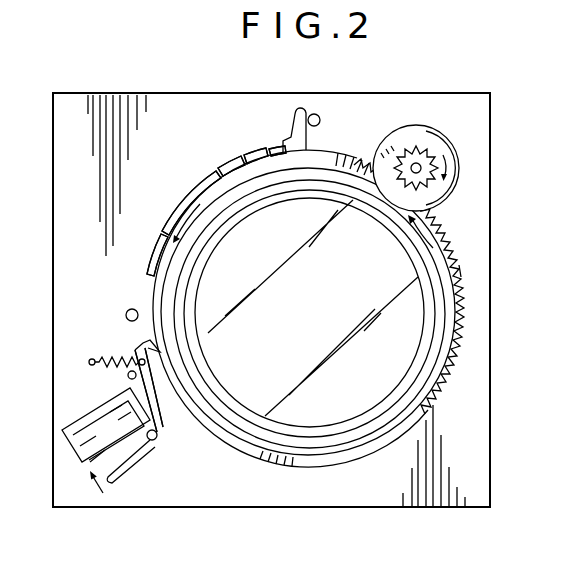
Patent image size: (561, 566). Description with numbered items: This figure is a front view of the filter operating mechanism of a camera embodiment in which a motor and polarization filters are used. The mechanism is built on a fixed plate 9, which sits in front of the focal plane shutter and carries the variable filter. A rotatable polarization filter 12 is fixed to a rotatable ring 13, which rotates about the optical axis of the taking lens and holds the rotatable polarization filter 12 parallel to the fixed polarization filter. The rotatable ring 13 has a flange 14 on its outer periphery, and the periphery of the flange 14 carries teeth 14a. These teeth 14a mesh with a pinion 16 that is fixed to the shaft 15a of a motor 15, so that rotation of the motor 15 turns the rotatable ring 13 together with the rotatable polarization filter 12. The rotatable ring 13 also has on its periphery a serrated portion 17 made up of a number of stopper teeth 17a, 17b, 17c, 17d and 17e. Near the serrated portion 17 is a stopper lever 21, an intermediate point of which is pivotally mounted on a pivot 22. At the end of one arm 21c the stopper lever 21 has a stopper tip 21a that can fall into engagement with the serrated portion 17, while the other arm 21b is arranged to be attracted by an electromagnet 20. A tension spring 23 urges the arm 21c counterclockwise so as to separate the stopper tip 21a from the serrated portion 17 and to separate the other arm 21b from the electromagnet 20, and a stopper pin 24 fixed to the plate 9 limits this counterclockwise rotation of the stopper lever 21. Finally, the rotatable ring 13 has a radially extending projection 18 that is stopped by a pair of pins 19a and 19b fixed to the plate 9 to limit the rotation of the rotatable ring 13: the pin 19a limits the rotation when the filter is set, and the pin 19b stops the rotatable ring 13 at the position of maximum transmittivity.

The fixed plate 9 is at (80, 103).
The rotatable polarization filter 12 is at (313, 410).
The rotatable ring 13 is at (430, 394).
The flange 14 is at (215, 197).
The teeth 14a is at (459, 271).
The motor 15 is at (440, 190).
The shaft 15a is at (411, 164).
The pinion 16 is at (426, 154).
The serrated portion 17 is at (151, 233).
The stopper tooth 17a is at (154, 263).
The stopper tooth 17b is at (183, 206).
The stopper tooth 17c is at (214, 169).
The stopper tooth 17d is at (242, 156).
The stopper tooth 17e is at (269, 149).
The radially extending projection 18 is at (296, 116).
The pin 19a is at (316, 114).
The pin 19b is at (127, 306).
The electromagnet 20 is at (73, 443).
The stopper lever 21 is at (149, 460).
The stopper tip 21a is at (165, 348).
The other arm 21b is at (118, 505).
The arm 21c is at (148, 397).
The pivot 22 is at (158, 440).
The tension spring 23 is at (112, 358).
The stopper pin 24 is at (128, 376).